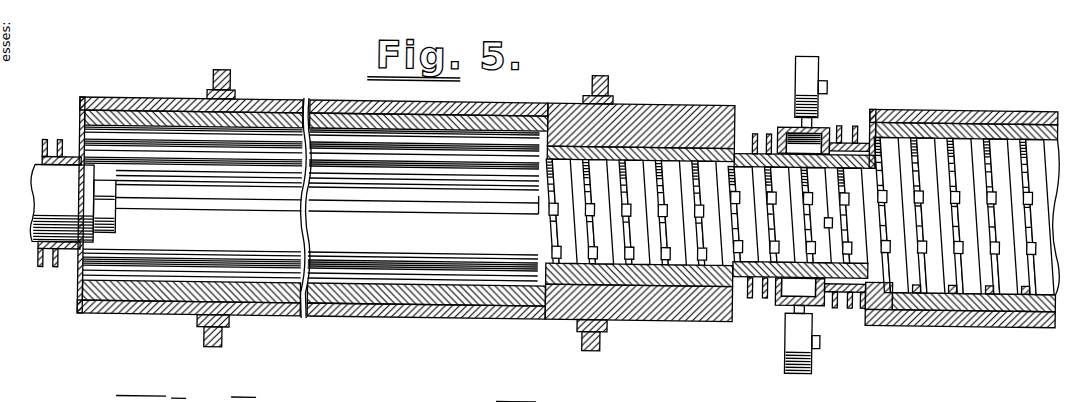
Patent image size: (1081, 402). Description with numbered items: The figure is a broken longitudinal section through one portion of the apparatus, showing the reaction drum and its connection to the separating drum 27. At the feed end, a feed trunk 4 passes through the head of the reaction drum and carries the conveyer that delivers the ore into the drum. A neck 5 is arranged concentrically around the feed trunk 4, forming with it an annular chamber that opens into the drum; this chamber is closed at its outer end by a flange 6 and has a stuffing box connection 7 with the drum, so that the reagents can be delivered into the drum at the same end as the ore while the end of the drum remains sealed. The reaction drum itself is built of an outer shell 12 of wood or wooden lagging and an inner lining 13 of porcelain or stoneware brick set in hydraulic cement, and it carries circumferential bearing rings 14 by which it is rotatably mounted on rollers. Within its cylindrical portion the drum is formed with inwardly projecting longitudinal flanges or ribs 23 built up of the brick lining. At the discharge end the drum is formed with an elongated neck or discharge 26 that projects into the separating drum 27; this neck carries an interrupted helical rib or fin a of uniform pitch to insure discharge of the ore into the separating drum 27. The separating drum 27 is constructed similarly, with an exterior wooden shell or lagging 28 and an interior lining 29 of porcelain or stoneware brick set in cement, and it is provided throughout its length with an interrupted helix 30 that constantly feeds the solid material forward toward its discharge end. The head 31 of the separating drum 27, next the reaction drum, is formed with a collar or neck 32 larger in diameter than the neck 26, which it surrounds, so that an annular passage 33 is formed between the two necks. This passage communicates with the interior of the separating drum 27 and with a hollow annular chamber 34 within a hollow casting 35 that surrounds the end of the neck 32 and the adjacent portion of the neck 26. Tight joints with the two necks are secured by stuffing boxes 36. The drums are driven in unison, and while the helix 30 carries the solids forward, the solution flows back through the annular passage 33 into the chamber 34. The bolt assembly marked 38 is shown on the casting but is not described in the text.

The feed trunk 4 is at (117, 230).
The neck 5 is at (35, 172).
The flange 6 is at (167, 94).
The stuffing box connection 7 is at (47, 140).
The outer shell 12 is at (466, 314).
The inner lining 13 is at (398, 314).
The circumferential bearing rings 14 is at (221, 68).
The longitudinal flanges or ribs 23 is at (435, 210).
The neck or discharge 26 is at (826, 224).
The separating drum 27 is at (968, 301).
The exterior wooden shell or lagging 28 is at (983, 94).
The interior lining 29 is at (987, 317).
The interrupted helix 30 is at (920, 275).
The head 31 is at (870, 111).
The collar or neck 32 is at (865, 284).
The annular passage 33 is at (836, 300).
The hollow annular chamber 34 is at (793, 282).
The hollow casting 35 is at (780, 120).
The stuffing boxes 36 is at (752, 300).
The bolt 38 is at (806, 52).
The helical rib or fin a is at (818, 214).